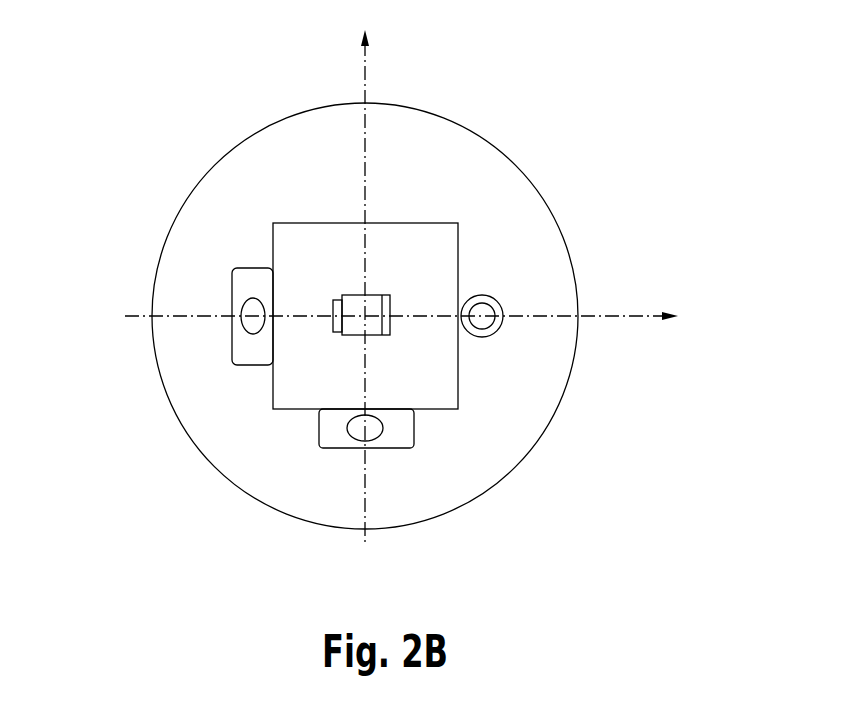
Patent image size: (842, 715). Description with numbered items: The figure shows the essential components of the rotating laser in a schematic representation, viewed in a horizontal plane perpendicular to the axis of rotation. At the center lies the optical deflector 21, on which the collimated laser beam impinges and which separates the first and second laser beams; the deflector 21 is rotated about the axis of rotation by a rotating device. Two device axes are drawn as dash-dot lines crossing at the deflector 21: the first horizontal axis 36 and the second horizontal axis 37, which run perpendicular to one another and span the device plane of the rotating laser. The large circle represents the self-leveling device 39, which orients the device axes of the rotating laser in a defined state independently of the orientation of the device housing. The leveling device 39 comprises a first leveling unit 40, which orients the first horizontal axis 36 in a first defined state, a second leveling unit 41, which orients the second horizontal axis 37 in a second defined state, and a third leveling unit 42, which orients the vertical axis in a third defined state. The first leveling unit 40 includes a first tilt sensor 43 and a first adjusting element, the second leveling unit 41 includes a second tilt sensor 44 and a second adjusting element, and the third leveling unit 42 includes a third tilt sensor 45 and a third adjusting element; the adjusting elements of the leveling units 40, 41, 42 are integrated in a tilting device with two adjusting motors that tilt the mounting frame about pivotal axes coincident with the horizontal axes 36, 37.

The optical deflector 21 is at (358, 325).
The first horizontal axis 36 is at (620, 318).
The second horizontal axis 37 is at (362, 56).
The self-leveling device 39 is at (274, 198).
The first leveling unit 40 is at (344, 485).
The second leveling unit 41 is at (198, 295).
The third leveling unit 42 is at (480, 278).
The first tilt sensor 43 is at (400, 437).
The second tilt sensor 44 is at (257, 348).
The third tilt sensor 45 is at (480, 320).